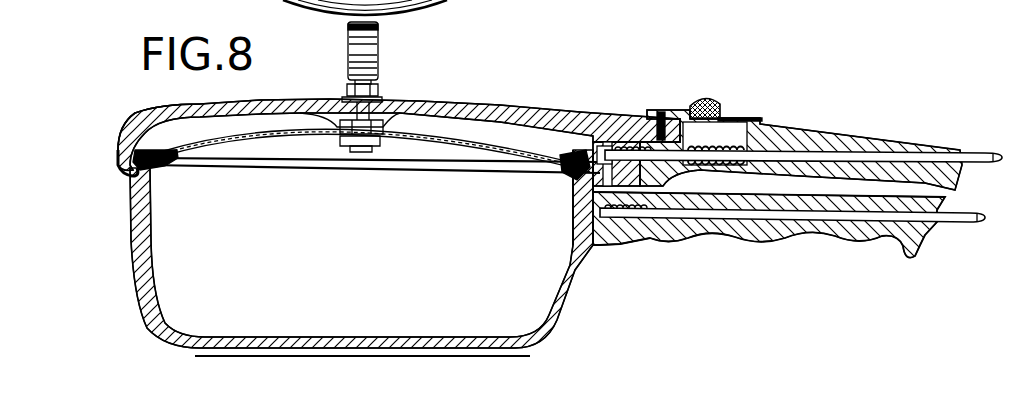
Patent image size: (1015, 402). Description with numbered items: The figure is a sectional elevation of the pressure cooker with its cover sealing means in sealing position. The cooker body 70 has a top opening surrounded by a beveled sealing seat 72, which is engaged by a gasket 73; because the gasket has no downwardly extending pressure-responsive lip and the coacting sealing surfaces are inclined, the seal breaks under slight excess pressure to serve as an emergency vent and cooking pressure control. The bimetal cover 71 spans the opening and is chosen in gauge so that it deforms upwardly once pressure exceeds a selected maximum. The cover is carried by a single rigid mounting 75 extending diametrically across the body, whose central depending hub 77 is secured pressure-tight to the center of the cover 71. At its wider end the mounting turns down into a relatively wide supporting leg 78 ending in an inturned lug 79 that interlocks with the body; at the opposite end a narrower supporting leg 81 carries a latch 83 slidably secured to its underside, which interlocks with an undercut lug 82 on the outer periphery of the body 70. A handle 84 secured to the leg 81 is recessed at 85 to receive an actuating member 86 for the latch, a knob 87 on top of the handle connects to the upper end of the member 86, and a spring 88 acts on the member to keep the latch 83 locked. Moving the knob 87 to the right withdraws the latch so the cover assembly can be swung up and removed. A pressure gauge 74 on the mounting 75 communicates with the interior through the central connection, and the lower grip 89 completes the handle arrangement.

The cooker body 70 is at (143, 205).
The bimetal cover 71 is at (302, 133).
The beveled sealing seat 72 is at (175, 170).
The gasket 73 is at (122, 143).
The pressure gauge 74 is at (362, 53).
The mounting 75 is at (478, 106).
The central depending hub 77 is at (400, 112).
The supporting leg 78 is at (122, 134).
The inturned lug 79 is at (118, 175).
The supporting leg 81 is at (584, 160).
The undercut lug 82 is at (592, 145).
The latch 83 is at (577, 218).
The handle 84 is at (797, 130).
The recess 85 is at (737, 113).
The actuating member 86 is at (665, 110).
The knob 87 is at (703, 102).
The spring 88 is at (700, 143).
The lower handle grip 89 is at (807, 227).